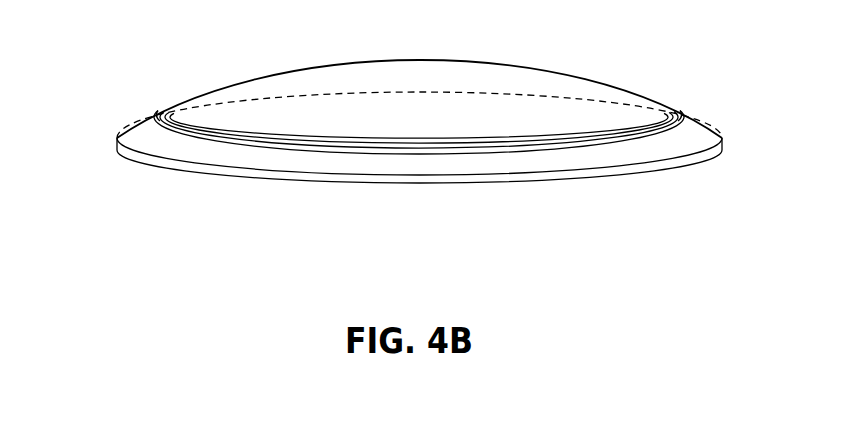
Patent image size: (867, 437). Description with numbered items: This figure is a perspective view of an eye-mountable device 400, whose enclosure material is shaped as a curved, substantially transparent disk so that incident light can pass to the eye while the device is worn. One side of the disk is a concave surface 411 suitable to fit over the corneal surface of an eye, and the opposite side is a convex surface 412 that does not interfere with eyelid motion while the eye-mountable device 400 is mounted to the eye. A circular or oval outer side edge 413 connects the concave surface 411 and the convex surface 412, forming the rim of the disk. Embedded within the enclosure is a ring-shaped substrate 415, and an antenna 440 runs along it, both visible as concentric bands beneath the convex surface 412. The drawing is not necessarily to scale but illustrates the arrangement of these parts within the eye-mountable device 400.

The eye-mountable device 400 is at (208, 66).
The concave surface 411 is at (653, 168).
The convex surface 412 is at (640, 93).
The outer side edge 413 is at (553, 172).
The substrate 415 is at (160, 122).
The antenna 440 is at (672, 115).